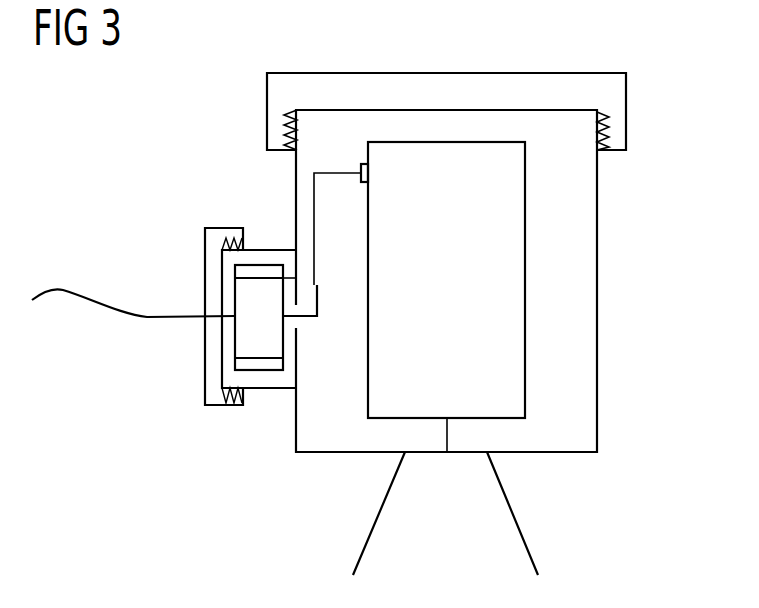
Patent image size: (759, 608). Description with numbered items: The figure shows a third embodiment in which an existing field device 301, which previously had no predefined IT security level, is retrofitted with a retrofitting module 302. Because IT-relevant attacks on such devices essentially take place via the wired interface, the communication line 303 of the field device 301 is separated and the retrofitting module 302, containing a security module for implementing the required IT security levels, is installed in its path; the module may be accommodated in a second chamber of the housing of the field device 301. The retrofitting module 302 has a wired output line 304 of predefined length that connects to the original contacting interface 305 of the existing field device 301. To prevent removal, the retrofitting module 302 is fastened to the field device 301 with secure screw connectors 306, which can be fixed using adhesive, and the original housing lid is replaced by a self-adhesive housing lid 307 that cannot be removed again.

The field device 301 is at (598, 282).
The retrofitting module 302 is at (235, 342).
The communication line 303 is at (80, 292).
The wired output line 304 is at (320, 290).
The original contacting interface 305 is at (369, 175).
The secure screw connectors 306 is at (258, 272).
The housing lid 307 is at (628, 112).